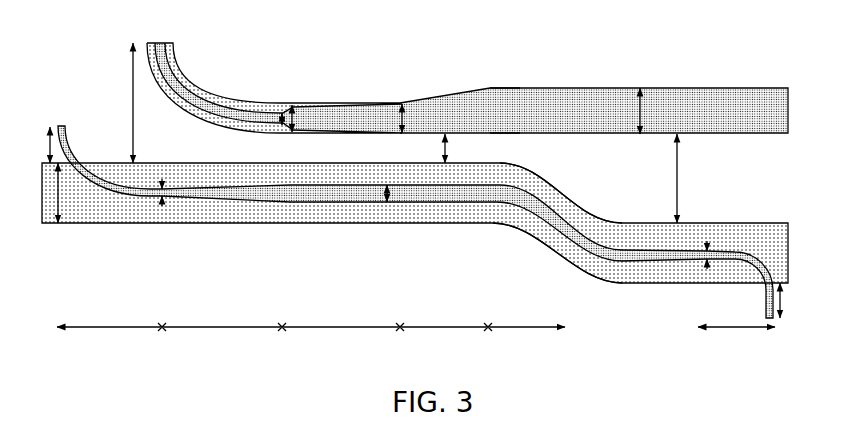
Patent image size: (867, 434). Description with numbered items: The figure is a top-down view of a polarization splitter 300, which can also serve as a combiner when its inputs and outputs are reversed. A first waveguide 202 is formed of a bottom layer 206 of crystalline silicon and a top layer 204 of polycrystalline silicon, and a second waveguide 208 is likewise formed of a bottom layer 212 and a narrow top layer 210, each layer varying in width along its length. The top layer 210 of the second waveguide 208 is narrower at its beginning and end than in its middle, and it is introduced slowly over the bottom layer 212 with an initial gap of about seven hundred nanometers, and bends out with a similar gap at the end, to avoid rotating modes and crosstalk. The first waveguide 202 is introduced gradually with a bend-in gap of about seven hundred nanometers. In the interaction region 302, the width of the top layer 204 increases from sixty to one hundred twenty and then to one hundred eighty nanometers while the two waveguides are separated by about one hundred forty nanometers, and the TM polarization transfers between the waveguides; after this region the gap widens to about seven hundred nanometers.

The polarization splitter 300 is at (88, 75).
The first waveguide 202 is at (697, 88).
The top layer of the first waveguide 204 is at (517, 88).
The bottom layer of the first waveguide 206 is at (231, 100).
The second waveguide 208 is at (222, 224).
The top layer of the second waveguide 210 is at (342, 224).
The bottom layer of the second waveguide 212 is at (550, 256).
The interaction region 302 is at (383, 103).